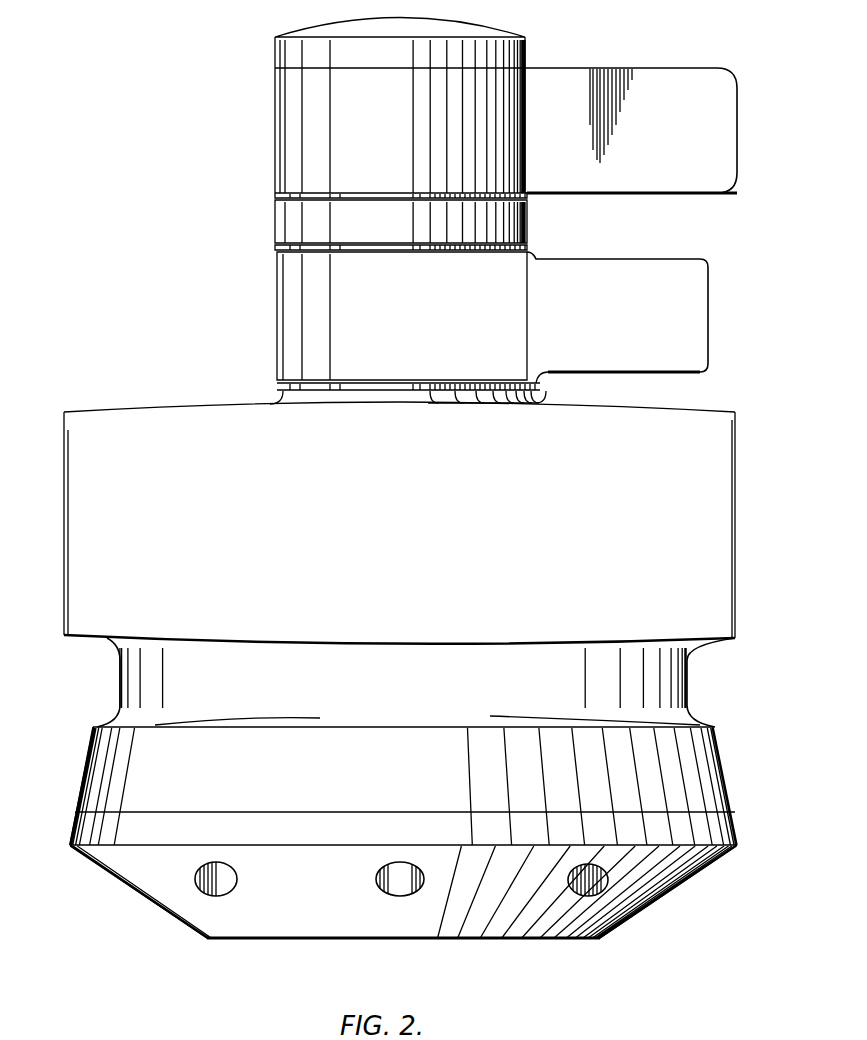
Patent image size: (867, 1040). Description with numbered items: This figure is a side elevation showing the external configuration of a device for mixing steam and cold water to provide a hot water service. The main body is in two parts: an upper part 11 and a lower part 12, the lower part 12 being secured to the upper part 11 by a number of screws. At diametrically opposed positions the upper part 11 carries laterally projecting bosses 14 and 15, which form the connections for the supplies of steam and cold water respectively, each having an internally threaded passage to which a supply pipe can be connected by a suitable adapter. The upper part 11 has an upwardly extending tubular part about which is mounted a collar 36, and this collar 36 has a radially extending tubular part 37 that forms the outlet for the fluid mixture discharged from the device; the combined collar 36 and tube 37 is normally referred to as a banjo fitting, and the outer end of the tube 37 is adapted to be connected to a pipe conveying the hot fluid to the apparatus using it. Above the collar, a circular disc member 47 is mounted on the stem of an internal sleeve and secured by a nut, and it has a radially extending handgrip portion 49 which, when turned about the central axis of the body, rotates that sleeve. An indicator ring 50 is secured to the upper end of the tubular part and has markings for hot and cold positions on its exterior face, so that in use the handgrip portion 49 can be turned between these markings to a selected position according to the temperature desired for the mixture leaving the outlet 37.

The upper part 11 is at (170, 430).
The lower part 12 is at (278, 926).
The boss 14 is at (80, 428).
The boss 15 is at (616, 418).
The collar 36 is at (296, 310).
The radially extending tubular part 37 is at (616, 272).
The circular disc member 47 is at (292, 124).
The handgrip portion 49 is at (506, 130).
The indicator ring 50 is at (293, 224).